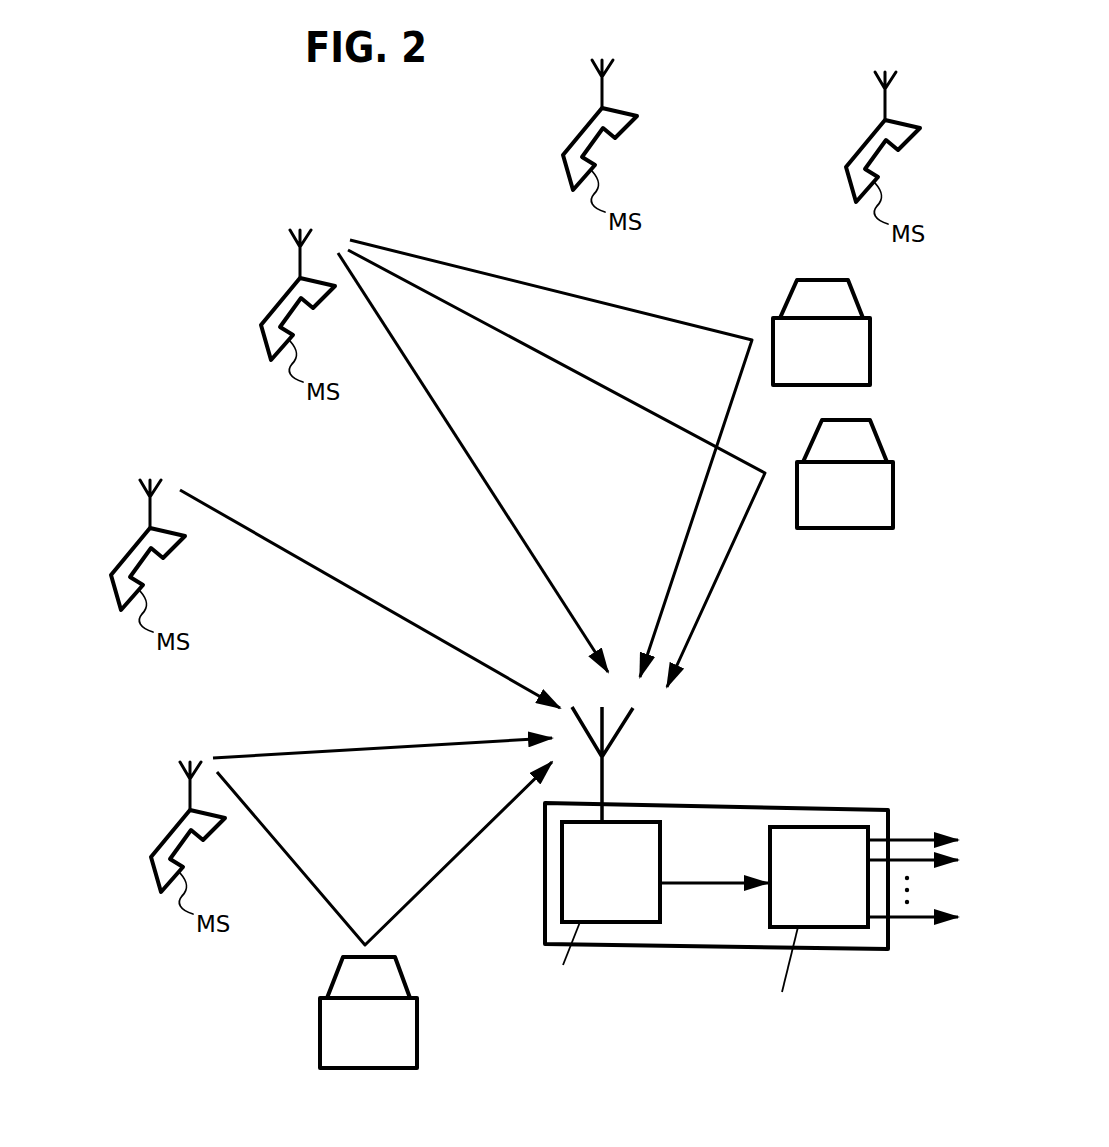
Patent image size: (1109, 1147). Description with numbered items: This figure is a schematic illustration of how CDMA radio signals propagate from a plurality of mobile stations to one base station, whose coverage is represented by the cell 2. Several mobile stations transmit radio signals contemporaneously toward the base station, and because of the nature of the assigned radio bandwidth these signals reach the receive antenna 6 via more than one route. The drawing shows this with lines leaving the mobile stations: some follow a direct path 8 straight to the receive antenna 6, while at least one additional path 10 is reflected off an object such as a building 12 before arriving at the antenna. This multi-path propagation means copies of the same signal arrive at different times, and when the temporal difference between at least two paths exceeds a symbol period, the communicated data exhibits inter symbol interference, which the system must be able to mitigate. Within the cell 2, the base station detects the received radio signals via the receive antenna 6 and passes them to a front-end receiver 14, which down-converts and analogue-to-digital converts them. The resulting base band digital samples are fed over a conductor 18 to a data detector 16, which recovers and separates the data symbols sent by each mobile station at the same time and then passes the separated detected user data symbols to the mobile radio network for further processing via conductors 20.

The cell 2 is at (771, 808).
The receive antenna 6 is at (632, 725).
The direct path 8 is at (477, 465).
The additional path 10 is at (607, 303).
The building 12 is at (836, 368).
The front-end receiver 14 is at (627, 888).
The data detector 16 is at (835, 893).
The conductor 18 is at (733, 885).
The conductors 20 is at (917, 917).